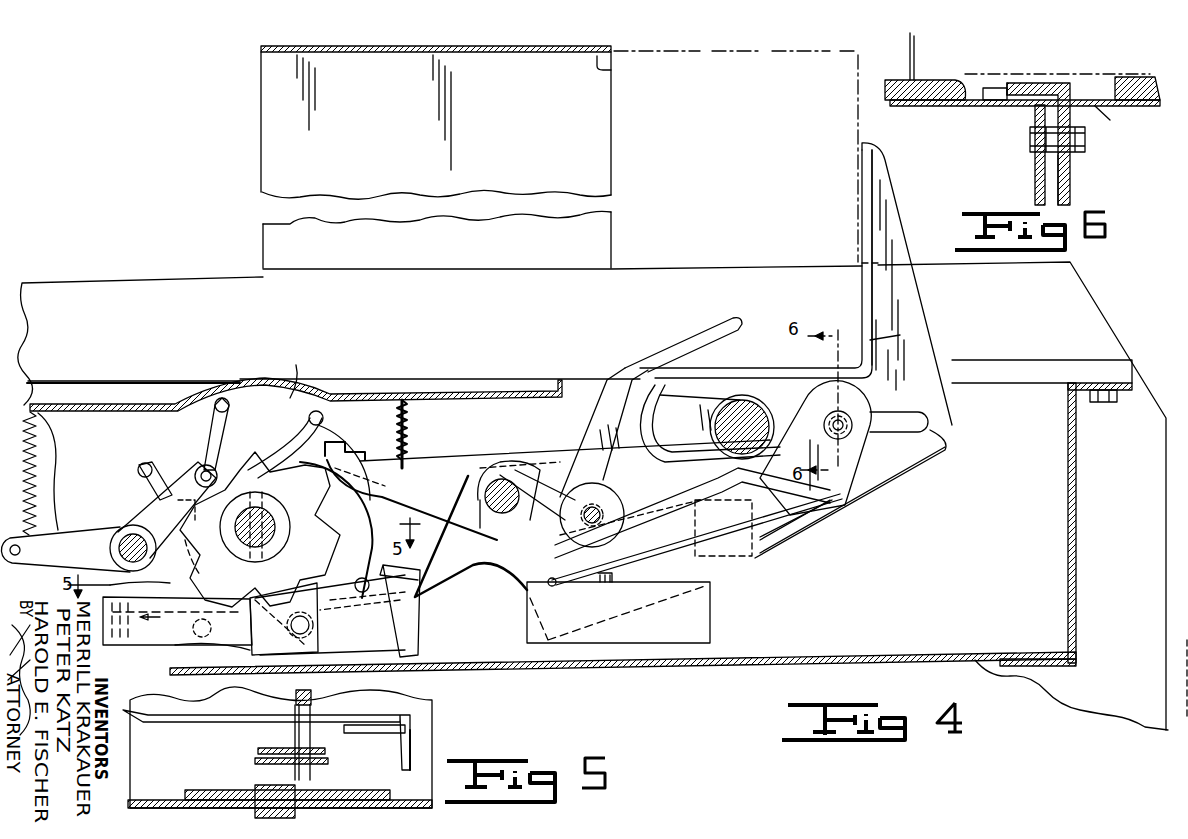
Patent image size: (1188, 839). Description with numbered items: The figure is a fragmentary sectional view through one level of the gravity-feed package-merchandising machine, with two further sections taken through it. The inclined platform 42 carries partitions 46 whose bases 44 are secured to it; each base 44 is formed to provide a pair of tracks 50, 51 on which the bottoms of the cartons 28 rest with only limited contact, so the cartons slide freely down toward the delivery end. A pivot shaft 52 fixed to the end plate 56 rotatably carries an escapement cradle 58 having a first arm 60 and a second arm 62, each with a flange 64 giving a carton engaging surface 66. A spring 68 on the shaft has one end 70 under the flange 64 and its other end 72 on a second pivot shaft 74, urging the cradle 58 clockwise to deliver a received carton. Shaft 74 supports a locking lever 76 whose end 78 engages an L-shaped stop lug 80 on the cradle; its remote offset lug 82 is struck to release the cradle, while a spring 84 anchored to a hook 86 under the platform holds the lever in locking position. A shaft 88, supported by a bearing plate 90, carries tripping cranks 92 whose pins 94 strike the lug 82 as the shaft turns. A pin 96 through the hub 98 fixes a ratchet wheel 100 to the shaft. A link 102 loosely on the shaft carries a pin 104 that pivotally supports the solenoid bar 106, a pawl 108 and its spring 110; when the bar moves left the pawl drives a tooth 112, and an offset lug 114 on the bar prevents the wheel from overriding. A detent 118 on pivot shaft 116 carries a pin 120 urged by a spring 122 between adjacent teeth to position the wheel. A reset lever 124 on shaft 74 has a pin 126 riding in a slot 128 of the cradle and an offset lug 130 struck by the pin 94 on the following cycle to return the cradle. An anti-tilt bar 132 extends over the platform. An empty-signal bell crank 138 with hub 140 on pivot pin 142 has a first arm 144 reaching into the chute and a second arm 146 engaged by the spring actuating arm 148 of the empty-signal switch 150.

In FIG. 4, the carton 28 is at (835, 50).
In FIG. 4, the platform 42 is at (172, 404).
In FIG. 6, the platform 42 is at (1108, 120).
In FIG. 6, the base 44 is at (910, 106).
In FIG. 4, the partition 46 is at (208, 282).
In FIG. 6, the partition 46 is at (918, 48).
In FIG. 4, the track 50 is at (128, 383).
In FIG. 6, the track 50 is at (1125, 76).
In FIG. 6, the track 51 is at (955, 78).
In FIG. 4, the pivot shaft 52 is at (748, 398).
In FIG. 4, the end plate 56 is at (1078, 697).
In FIG. 4, the escapement cradle 58 is at (925, 458).
In FIG. 6, the escapement cradle 58 is at (1072, 195).
In FIG. 4, the first arm 60 is at (920, 302).
In FIG. 4, the second arm 62 is at (644, 360).
In FIG. 4, the flange 64 is at (862, 300).
In FIG. 6, the flange 64 is at (1045, 82).
In FIG. 4, the carton engaging surface 66 is at (872, 355).
In FIG. 6, the carton engaging surface 66 is at (1020, 82).
In FIG. 4, the spring 68 is at (800, 393).
In FIG. 4, the spring end 70 is at (700, 388).
In FIG. 4, the spring end 72 is at (462, 462).
In FIG. 4, the pivot shaft 74 is at (496, 520).
In FIG. 4, the locking lever 76 is at (428, 462).
In FIG. 4, the lever end 78 is at (775, 500).
In FIG. 4, the stop lug 80 is at (745, 565).
In FIG. 4, the offset lug 82 is at (364, 455).
In FIG. 4, the spring 84 is at (418, 420).
In FIG. 4, the hook 86 is at (405, 400).
In FIG. 4, the shaft 88 is at (268, 452).
In FIG. 5, the shaft 88 is at (312, 700).
In FIG. 5, the bearing plate 90 is at (378, 782).
In FIG. 4, the tripping crank 92 is at (295, 372).
In FIG. 4, the pin 94 is at (372, 596).
In FIG. 4, the pin 96 is at (260, 529).
In FIG. 4, the hub 98 is at (204, 634).
In FIG. 4, the ratchet wheel 100 is at (332, 520).
In FIG. 4, the link 102 is at (362, 588).
In FIG. 5, the link 102 is at (327, 750).
In FIG. 4, the pin 104 is at (330, 628).
In FIG. 5, the pin 104 is at (320, 766).
In FIG. 4, the solenoid bar 106 is at (140, 650).
In FIG. 5, the solenoid bar 106 is at (162, 735).
In FIG. 4, the pawl 108 is at (240, 662).
In FIG. 5, the pawl 108 is at (245, 772).
In FIG. 4, the spring 110 is at (320, 655).
In FIG. 4, the tooth 112 is at (170, 596).
In FIG. 4, the offset lug 114 is at (418, 630).
In FIG. 5, the offset lug 114 is at (425, 745).
In FIG. 4, the pivot shaft 116 is at (118, 530).
In FIG. 4, the detent 118 is at (178, 468).
In FIG. 4, the pin 120 is at (200, 455).
In FIG. 4, the spring 122 is at (42, 458).
In FIG. 4, the reset lever 124 is at (720, 585).
In FIG. 6, the reset lever 124 is at (1030, 185).
In FIG. 4, the pin 126 is at (845, 440).
In FIG. 6, the pin 126 is at (1086, 140).
In FIG. 4, the slot 128 is at (950, 425).
In FIG. 4, the offset lug 130 is at (446, 560).
In FIG. 4, the anti-tilt bar 132 is at (615, 65).
In FIG. 4, the empty-signal bell crank 138 is at (600, 385).
In FIG. 4, the hub 140 is at (625, 545).
In FIG. 4, the pivot pin 142 is at (560, 578).
In FIG. 4, the first arm 144 is at (695, 322).
In FIG. 4, the second arm 146 is at (835, 515).
In FIG. 4, the spring actuating arm 148 is at (790, 545).
In FIG. 4, the empty-signal switch 150 is at (670, 645).